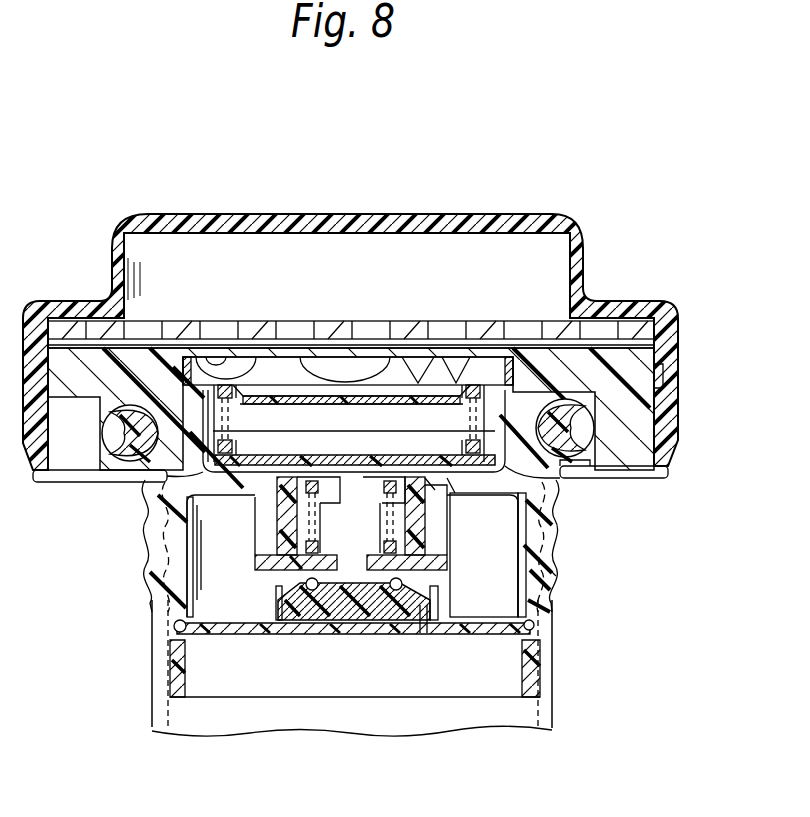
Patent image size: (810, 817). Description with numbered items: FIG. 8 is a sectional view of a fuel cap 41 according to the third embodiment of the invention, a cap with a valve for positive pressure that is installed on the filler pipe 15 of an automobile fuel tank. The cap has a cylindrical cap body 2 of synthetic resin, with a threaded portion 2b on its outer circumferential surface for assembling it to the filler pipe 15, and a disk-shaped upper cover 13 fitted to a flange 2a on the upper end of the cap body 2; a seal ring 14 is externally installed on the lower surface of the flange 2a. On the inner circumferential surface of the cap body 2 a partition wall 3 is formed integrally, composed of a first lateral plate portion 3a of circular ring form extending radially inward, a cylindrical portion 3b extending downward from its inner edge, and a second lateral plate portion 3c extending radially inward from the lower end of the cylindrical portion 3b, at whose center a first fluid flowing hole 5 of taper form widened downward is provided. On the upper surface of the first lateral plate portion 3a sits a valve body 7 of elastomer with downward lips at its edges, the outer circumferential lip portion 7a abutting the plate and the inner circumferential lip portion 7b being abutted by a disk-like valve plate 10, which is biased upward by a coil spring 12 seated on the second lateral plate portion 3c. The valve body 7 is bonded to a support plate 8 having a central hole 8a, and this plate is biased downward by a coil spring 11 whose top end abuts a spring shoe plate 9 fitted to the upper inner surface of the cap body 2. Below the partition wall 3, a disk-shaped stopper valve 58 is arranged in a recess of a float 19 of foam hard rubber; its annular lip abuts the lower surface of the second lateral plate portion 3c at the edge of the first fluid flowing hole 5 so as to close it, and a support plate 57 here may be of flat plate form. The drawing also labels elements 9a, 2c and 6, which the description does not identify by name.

The fuel cap 41 is at (460, 170).
The upper cover 13 is at (238, 215).
The coil spring 11 is at (228, 400).
The spring shoe plate 9 is at (266, 430).
The inner circumferential lip portion 7b is at (308, 455).
The hole 8a is at (345, 400).
The guide pin 9a is at (426, 446).
The support plate 8 is at (420, 442).
The seal ring 14 is at (128, 432).
The flange 2a is at (645, 385).
The valve body 7 is at (166, 481).
The outer circumferential lip portion 7a is at (548, 480).
The partition wall 3 is at (456, 516).
The first lateral plate portion 3a is at (220, 488).
The cylindrical portion 3b is at (442, 548).
The second lateral plate portion 3c is at (282, 568).
The coil spring 12 is at (292, 540).
The valve plate 10 is at (332, 480).
The first fluid flowing hole 5 is at (366, 568).
The stopper valve 58 is at (374, 578).
The filler pipe 15 is at (560, 563).
The threaded portion 2b is at (545, 606).
The seal ring 2c is at (178, 633).
The cap body 2 is at (552, 655).
The base plate 6 is at (244, 634).
The support plate 57 is at (295, 634).
The float 19 is at (421, 634).